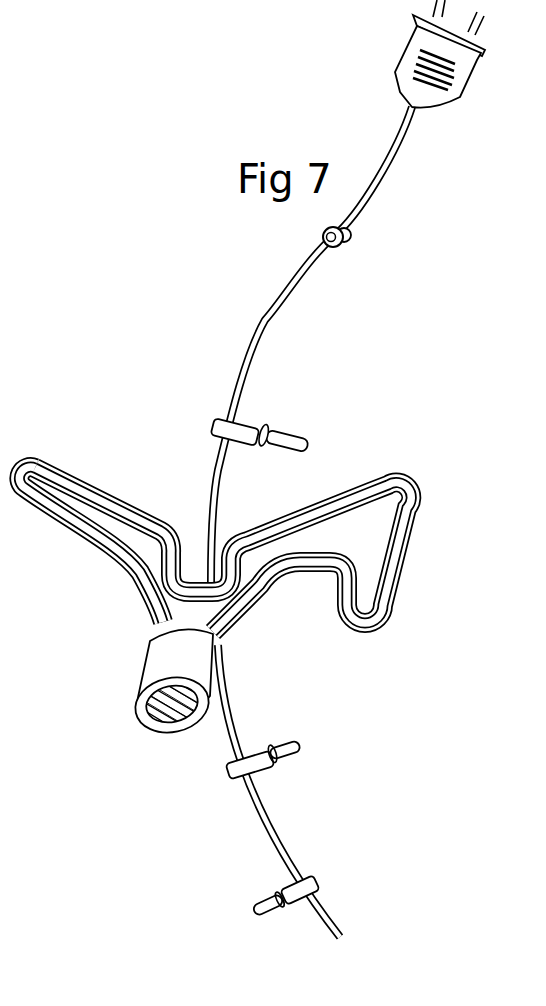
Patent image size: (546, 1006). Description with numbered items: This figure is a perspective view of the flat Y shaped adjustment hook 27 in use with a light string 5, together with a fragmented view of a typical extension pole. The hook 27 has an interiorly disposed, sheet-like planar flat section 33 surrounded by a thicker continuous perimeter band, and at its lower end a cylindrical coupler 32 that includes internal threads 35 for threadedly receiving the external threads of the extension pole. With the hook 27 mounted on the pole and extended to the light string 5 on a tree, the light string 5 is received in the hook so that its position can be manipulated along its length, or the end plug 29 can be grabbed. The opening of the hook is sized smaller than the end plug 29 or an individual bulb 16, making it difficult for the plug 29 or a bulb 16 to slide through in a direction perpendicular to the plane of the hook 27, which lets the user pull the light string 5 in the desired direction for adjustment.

The light string 5 is at (273, 312).
The bulb 16 is at (307, 441).
The Y shaped adjustment hook 27 is at (214, 617).
The end plug 29 is at (413, 58).
The cylindrical coupler 32 is at (158, 698).
The flat section 33 is at (215, 549).
The internal threads 35 is at (172, 714).